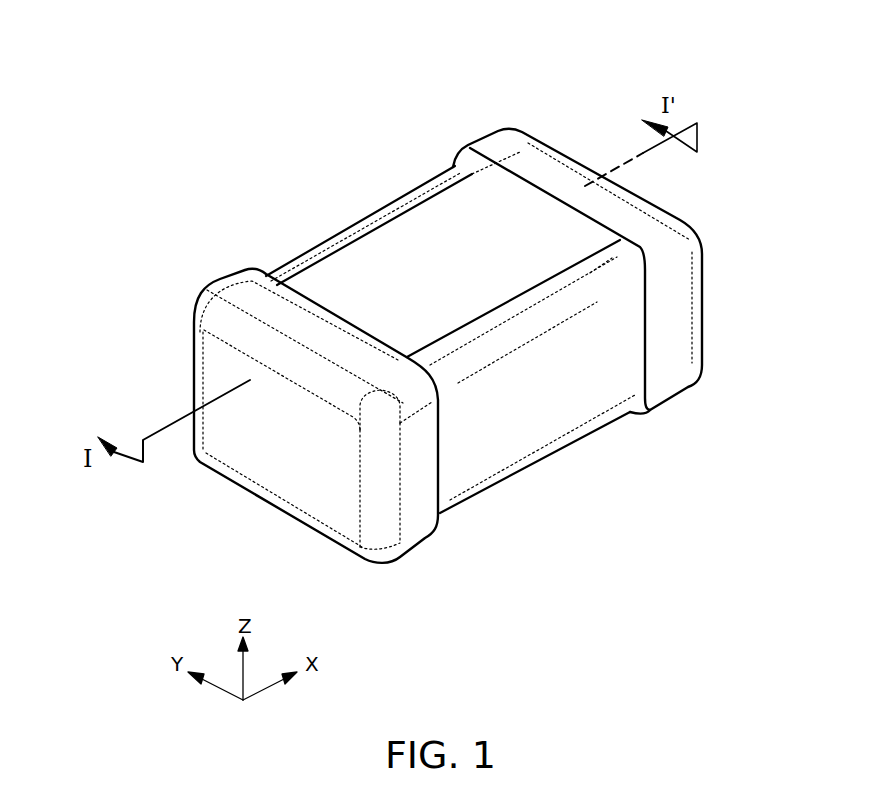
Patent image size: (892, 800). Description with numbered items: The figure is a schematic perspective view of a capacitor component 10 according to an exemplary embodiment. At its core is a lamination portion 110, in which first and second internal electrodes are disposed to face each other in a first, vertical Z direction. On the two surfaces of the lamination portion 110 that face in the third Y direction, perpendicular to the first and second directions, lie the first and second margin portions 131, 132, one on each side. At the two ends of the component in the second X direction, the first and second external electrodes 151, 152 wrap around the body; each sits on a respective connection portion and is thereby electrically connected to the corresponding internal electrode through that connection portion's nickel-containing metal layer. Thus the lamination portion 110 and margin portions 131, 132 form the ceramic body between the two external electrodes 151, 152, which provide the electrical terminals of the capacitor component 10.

The capacitor component 10 is at (346, 60).
The lamination portion 110 is at (520, 212).
The first margin portion 131 is at (597, 290).
The second margin portion 132 is at (363, 240).
The first external electrode 151 is at (228, 285).
The second external electrode 152 is at (498, 158).